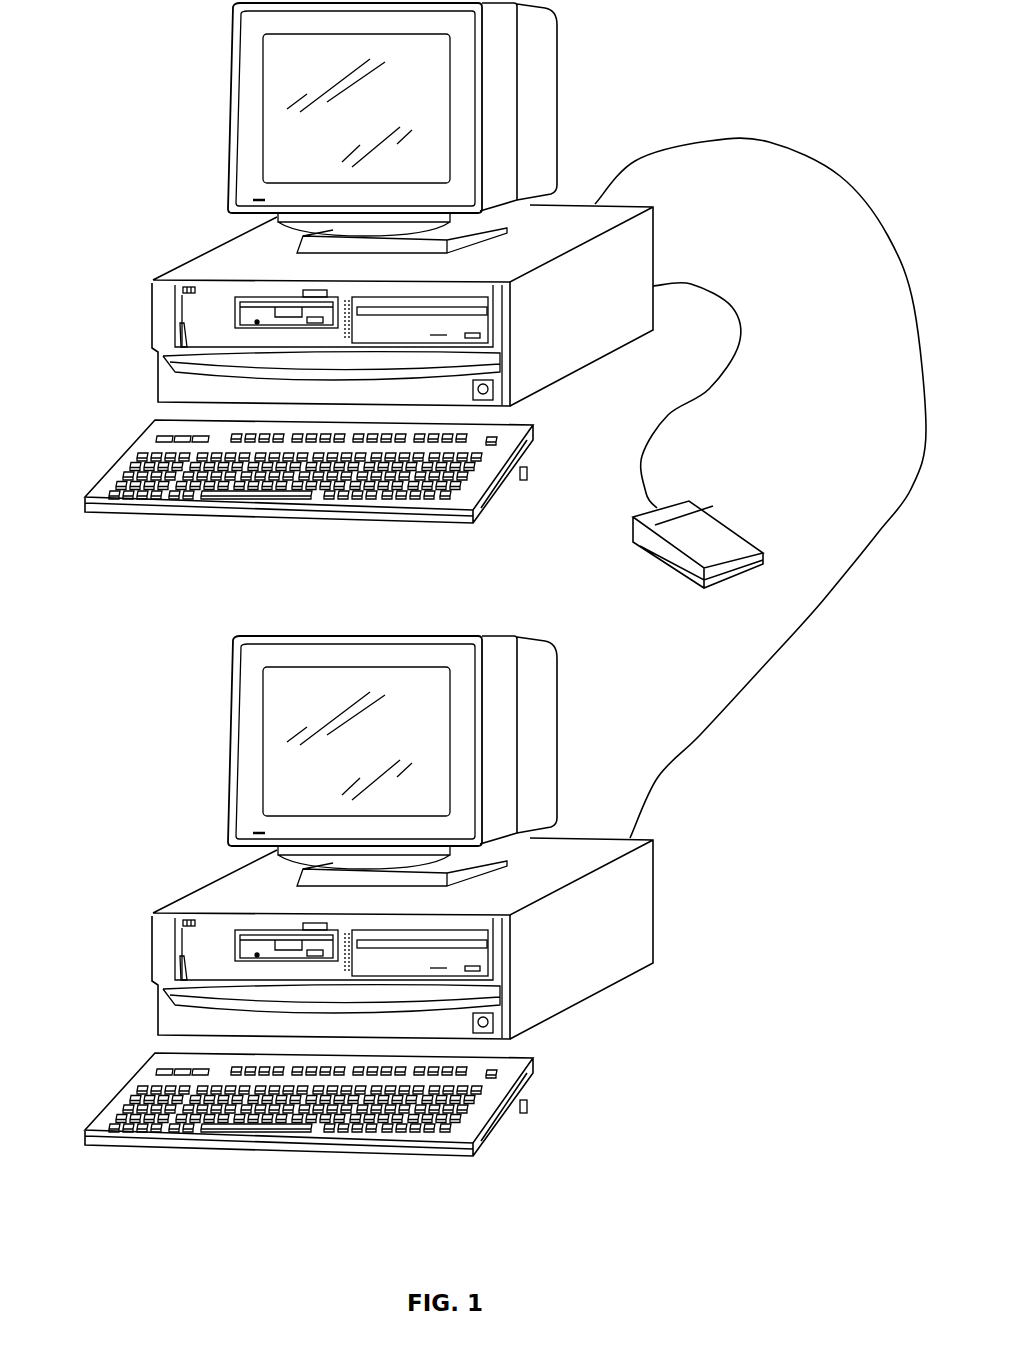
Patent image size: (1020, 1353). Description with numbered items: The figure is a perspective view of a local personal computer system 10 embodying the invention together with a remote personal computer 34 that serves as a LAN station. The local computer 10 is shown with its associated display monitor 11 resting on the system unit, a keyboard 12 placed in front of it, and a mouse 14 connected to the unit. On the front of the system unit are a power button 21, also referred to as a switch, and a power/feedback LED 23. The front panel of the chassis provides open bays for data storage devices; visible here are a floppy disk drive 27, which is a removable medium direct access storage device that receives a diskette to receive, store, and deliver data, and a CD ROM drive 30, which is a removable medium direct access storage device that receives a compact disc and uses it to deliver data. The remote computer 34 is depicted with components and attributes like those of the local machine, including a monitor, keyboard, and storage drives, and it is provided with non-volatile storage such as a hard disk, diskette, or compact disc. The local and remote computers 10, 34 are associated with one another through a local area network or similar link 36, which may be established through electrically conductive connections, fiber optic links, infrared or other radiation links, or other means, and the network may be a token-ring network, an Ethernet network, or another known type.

The computer system 10 is at (353, 204).
The display monitor 11 is at (557, 80).
The keyboard 12 is at (415, 523).
The mouse 14 is at (739, 525).
The power button 21 is at (493, 390).
The power/feedback LED 23 is at (430, 380).
The floppy disk drive 27 is at (250, 317).
The CD ROM drive 30 is at (483, 325).
The remote personal computer 34 is at (354, 839).
The link 36 is at (778, 650).